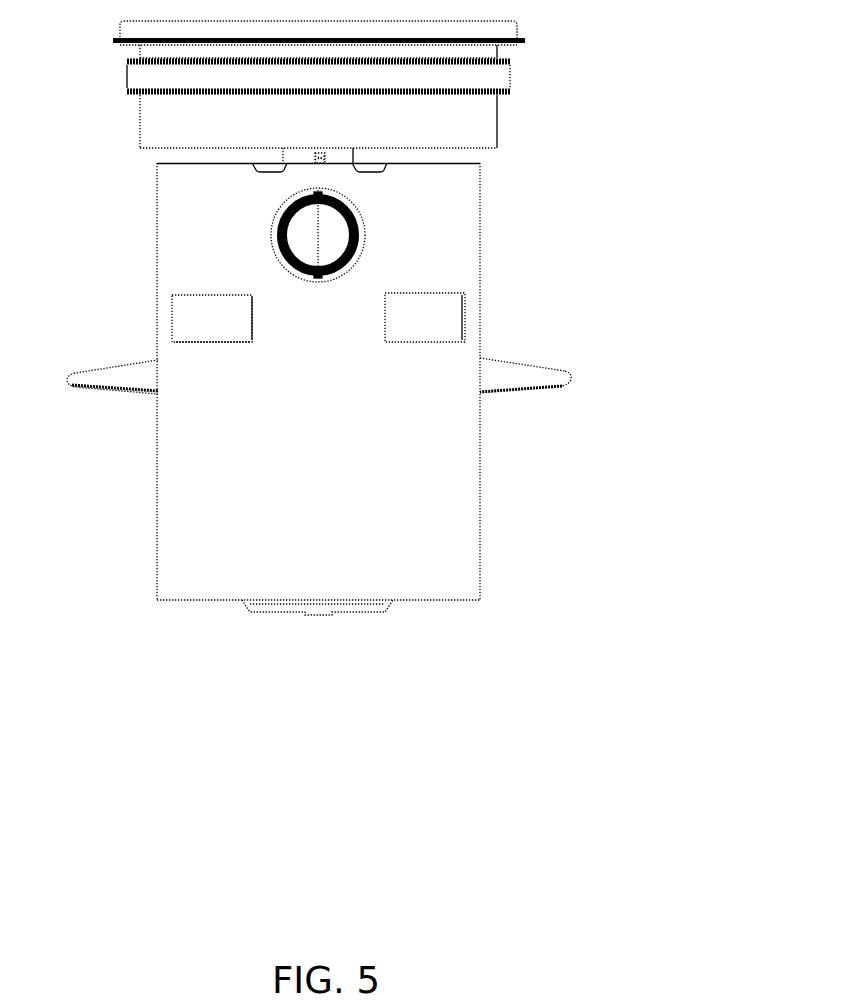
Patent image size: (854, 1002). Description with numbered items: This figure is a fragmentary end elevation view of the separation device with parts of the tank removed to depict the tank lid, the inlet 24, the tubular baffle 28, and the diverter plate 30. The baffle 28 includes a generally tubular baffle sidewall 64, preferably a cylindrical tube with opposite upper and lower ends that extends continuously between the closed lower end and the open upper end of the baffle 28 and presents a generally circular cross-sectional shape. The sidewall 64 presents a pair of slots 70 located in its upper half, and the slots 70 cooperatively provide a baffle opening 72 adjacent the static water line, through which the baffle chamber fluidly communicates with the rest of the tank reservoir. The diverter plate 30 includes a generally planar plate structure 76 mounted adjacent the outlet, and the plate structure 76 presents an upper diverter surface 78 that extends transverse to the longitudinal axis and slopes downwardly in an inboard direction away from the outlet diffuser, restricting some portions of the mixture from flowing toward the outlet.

The inlet 24 is at (350, 213).
The tubular baffle 28 is at (463, 532).
The diverter plate 30 is at (550, 375).
The baffle sidewall 64 is at (430, 478).
The slots 70 is at (213, 298).
The baffle opening 72 is at (213, 337).
The plate structure 76 is at (552, 388).
The upper diverter surface 78 is at (493, 378).